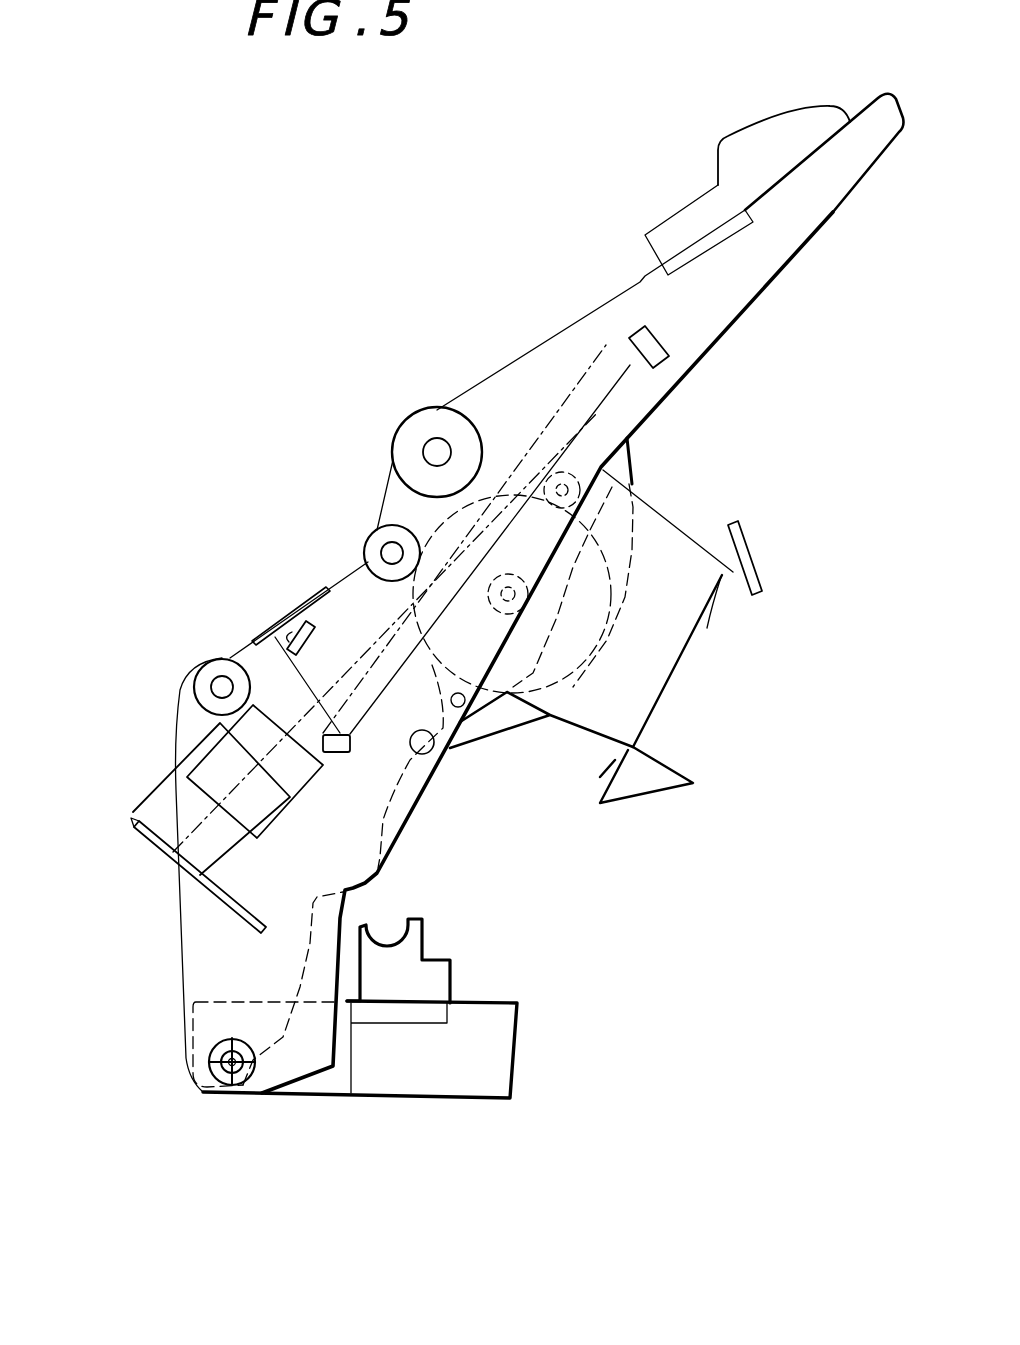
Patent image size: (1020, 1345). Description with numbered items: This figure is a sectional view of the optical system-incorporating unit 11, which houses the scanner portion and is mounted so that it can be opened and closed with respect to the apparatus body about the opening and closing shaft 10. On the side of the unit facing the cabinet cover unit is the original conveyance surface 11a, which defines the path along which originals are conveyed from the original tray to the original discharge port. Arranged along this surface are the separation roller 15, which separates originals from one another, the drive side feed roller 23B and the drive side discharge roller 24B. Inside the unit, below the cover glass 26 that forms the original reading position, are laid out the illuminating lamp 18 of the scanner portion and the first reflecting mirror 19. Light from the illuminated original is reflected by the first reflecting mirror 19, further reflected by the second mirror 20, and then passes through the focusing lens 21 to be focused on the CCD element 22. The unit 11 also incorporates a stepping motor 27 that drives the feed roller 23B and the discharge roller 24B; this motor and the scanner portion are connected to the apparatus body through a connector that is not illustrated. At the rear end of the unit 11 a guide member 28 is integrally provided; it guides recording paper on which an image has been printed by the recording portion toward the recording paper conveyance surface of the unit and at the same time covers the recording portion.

The opening and closing shaft 10 is at (195, 1077).
The optical system-incorporating unit 11 is at (415, 1112).
The original conveyance surface 11a is at (508, 362).
The separation roller 15 is at (422, 427).
The illuminating lamp 18 is at (320, 624).
The first reflecting mirror 19 is at (350, 752).
The second mirror 20 is at (660, 333).
The focusing lens 21 is at (263, 730).
The CCD element 22 is at (160, 813).
The feed roller 23B is at (378, 540).
The discharge roller 24B is at (217, 662).
The cover glass 26 is at (300, 607).
The stepping motor 27 is at (567, 683).
The guide member 28 is at (663, 525).